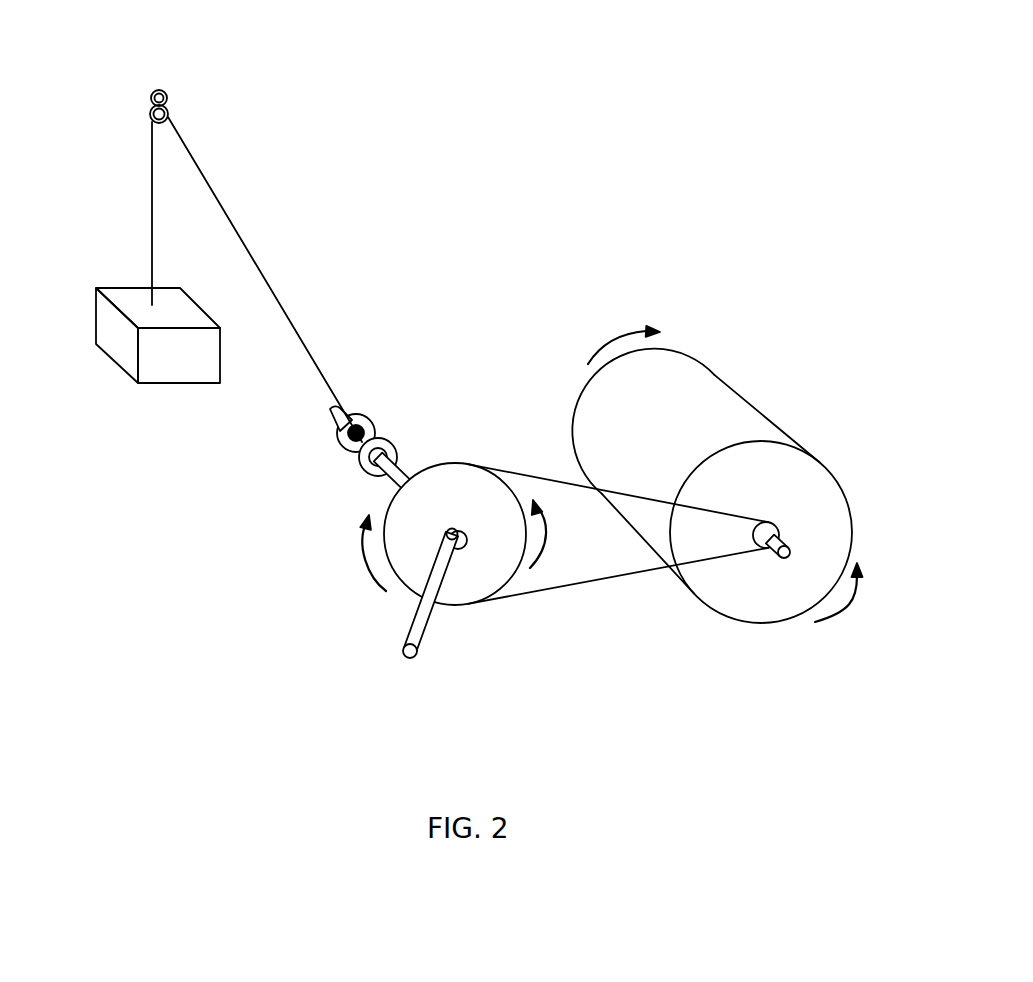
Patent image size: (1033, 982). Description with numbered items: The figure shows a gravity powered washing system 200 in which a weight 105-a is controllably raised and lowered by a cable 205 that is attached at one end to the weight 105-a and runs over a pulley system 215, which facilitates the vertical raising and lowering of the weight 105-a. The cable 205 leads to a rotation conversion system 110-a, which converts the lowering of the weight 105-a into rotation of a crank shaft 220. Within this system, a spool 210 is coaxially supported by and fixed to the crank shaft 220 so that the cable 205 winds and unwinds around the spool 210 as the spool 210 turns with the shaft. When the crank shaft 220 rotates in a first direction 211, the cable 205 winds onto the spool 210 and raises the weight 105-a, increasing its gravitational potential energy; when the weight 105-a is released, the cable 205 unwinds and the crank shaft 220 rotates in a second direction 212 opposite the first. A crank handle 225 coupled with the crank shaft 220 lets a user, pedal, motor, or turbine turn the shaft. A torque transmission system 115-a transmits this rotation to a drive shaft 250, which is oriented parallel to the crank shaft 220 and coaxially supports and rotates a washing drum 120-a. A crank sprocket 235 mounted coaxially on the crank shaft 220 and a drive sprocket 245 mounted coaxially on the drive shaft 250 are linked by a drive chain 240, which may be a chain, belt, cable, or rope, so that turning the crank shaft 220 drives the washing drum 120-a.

The gravity powered washing system 200 is at (645, 92).
The weight 105-a is at (112, 288).
The pulley system 215 is at (167, 96).
The cable 205 is at (289, 306).
The crank shaft 220 is at (337, 428).
The spool 210 is at (372, 430).
The rotation conversion system 110-a is at (378, 491).
The crank sprocket 235 is at (454, 463).
The crank handle 225 is at (403, 607).
The first direction 211 is at (358, 558).
The second direction 212 is at (550, 543).
The washing drum 120-a is at (757, 405).
The drive sprocket 245 is at (780, 539).
The drive shaft 250 is at (786, 558).
The drive chain 240 is at (644, 576).
The torque transmission system 115-a is at (545, 596).